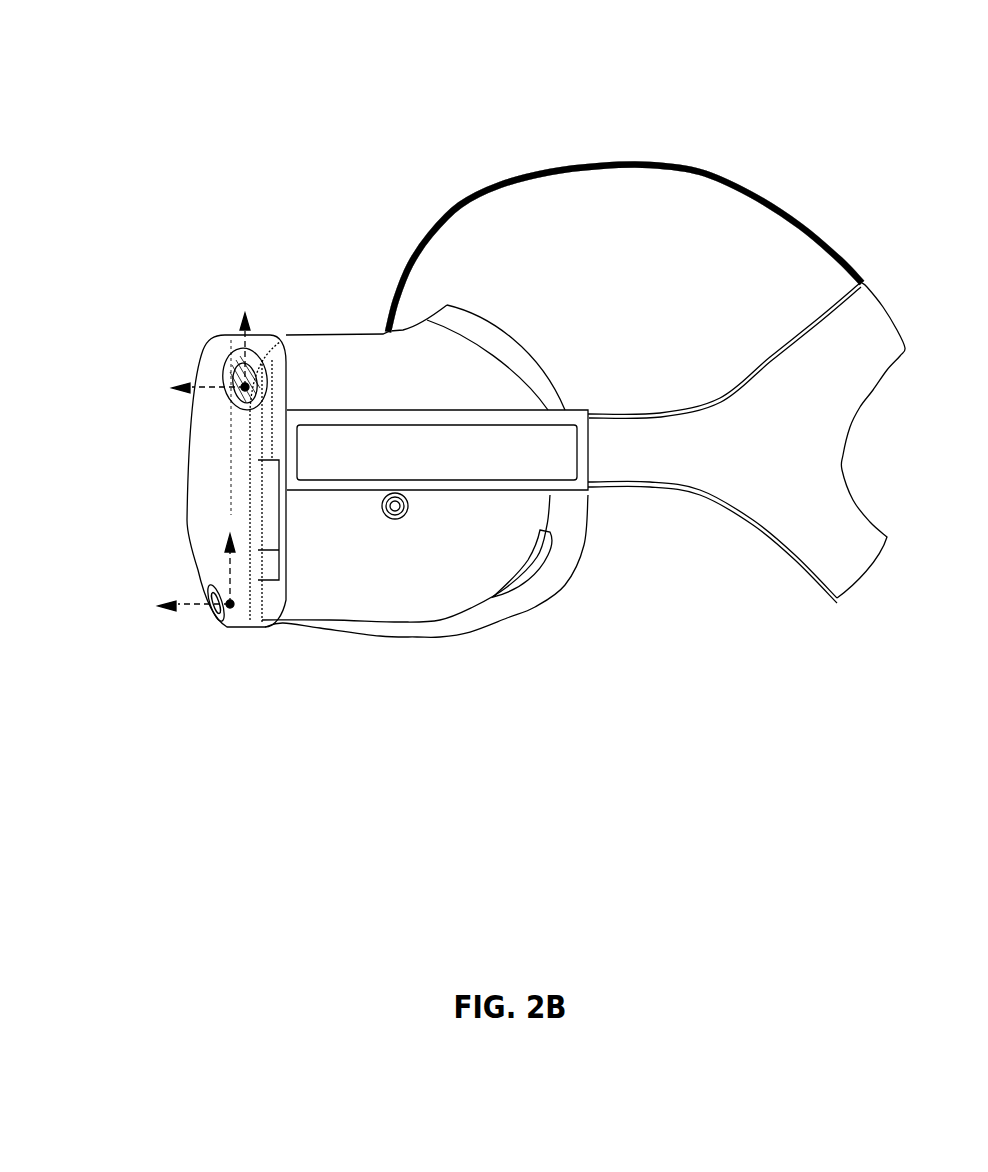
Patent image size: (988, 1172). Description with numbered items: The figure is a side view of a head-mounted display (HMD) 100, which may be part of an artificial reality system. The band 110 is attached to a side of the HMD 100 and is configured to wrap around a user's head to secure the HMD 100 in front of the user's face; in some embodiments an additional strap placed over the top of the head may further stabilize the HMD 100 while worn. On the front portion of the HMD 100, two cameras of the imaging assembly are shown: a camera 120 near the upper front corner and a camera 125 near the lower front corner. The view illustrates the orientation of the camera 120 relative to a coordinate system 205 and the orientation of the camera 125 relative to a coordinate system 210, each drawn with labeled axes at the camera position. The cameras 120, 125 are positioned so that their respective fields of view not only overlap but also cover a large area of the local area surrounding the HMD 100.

The head-mounted display 100 is at (160, 44).
The band 110 is at (698, 467).
The camera 120 is at (248, 385).
The camera 125 is at (222, 612).
The coordinate system 205 is at (226, 306).
The coordinate system 210 is at (258, 606).